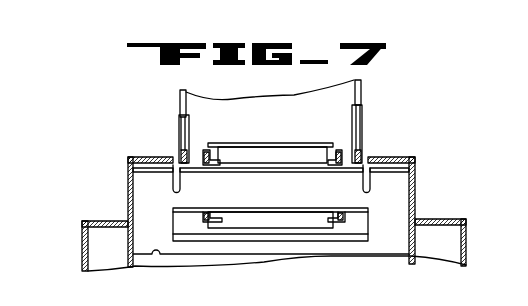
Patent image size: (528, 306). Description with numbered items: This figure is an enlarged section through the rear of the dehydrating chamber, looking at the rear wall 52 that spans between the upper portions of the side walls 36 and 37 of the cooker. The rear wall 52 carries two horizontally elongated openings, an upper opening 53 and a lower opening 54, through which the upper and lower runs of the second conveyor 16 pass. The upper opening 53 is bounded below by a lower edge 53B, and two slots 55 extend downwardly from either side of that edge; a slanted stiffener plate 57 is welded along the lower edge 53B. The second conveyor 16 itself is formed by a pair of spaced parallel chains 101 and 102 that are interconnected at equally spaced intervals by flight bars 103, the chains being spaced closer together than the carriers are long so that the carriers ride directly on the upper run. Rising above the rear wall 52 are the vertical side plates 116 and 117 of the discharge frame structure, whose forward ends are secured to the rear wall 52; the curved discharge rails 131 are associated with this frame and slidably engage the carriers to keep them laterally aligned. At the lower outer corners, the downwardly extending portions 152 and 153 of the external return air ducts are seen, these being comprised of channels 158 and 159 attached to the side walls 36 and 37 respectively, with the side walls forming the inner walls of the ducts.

The second conveyor 16 is at (270, 191).
The side wall 36 is at (415, 192).
The side wall 37 is at (128, 192).
The rear wall 52 is at (390, 157).
The upper opening 53 is at (271, 189).
The lower edge 53B is at (286, 172).
The lower opening 54 is at (366, 229).
The slot 55 is at (128, 171).
The stiffener plate 57 is at (288, 162).
The chain 101 is at (332, 211).
The chain 102 is at (222, 178).
The flight bar 103 is at (237, 147).
The side plate 116 is at (361, 86).
The side plate 117 is at (180, 96).
The discharge rail 131 is at (179, 127).
The downwardly extending portion 152 is at (466, 258).
The downwardly extending portion 153 is at (82, 243).
The channel 158 is at (466, 236).
The channel 159 is at (82, 226).